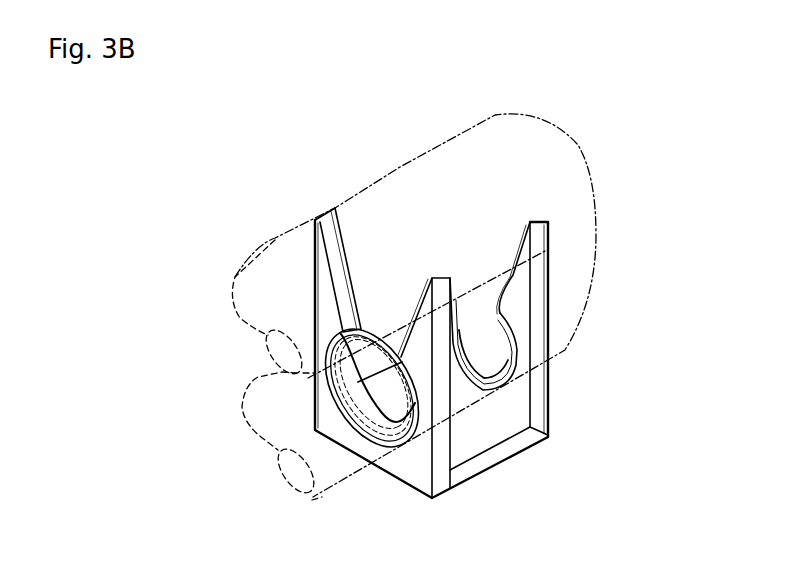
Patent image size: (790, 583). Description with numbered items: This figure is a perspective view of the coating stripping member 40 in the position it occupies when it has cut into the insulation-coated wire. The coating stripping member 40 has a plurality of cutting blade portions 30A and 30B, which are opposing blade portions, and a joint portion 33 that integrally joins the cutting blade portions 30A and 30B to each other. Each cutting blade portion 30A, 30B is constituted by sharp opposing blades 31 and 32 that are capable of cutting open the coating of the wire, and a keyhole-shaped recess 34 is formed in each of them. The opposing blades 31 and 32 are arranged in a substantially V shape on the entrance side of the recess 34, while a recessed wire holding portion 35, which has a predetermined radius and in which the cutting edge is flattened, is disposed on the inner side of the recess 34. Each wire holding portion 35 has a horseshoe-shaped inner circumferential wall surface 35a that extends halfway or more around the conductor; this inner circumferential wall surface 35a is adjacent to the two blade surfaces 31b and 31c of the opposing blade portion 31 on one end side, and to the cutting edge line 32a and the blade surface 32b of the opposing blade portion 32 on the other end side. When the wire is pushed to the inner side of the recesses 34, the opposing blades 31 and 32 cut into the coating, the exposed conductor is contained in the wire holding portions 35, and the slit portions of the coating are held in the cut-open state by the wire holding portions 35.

The coating stripping member 40 is at (600, 405).
The joint portion 33 is at (507, 450).
The opposing blade 31 is at (313, 272).
The blade surface 31b is at (333, 247).
The blade surface 31c is at (347, 258).
The opposing blade 32 is at (546, 288).
The cutting edge line 32a is at (522, 240).
The blade surface 32b is at (411, 337).
The wire holding portion 35 is at (412, 400).
The inner circumferential wall surface 35a is at (345, 380).
The cutting blade portion 30A is at (297, 306).
The cutting blade portion 30B is at (560, 325).
The keyhole-shaped recess 34 is at (503, 203).